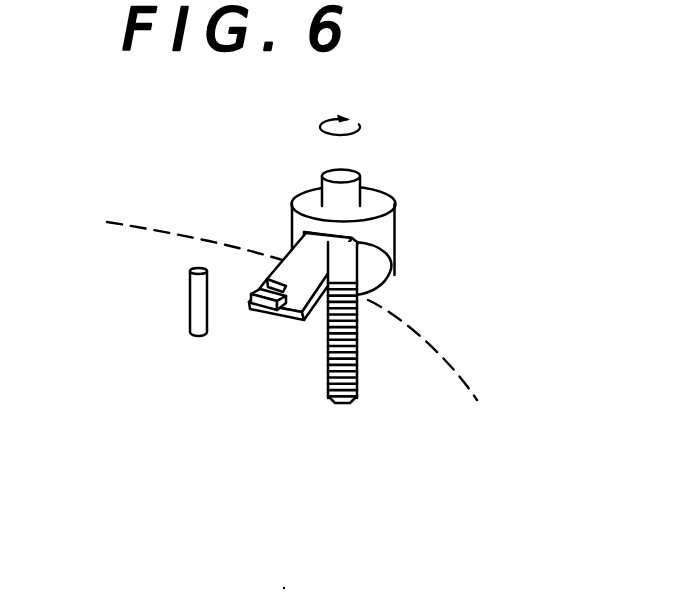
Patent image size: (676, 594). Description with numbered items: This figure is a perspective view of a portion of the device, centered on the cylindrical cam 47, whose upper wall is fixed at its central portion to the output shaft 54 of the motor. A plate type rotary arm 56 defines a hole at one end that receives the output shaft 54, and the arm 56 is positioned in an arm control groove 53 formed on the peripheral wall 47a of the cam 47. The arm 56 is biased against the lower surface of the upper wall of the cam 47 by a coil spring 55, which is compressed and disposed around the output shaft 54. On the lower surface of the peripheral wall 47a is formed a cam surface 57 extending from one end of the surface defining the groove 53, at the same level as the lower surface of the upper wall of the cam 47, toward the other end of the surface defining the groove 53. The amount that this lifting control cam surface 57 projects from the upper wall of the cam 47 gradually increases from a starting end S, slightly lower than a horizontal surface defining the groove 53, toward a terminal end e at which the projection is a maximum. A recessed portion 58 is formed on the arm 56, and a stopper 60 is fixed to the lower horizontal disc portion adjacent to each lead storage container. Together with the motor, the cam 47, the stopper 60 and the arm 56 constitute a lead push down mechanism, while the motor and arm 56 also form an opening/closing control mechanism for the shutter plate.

The cylindrical cam 47 is at (390, 240).
The peripheral wall 47a is at (365, 273).
The arm control groove 53 is at (327, 233).
The output shaft 54 is at (437, 388).
The coil spring 55 is at (356, 351).
The plate type rotary arm 56 is at (287, 256).
The cam surface 57 is at (388, 274).
The recessed portion 58 is at (258, 313).
The stopper 60 is at (193, 298).
The starting end S is at (347, 239).
The terminal end e is at (300, 324).